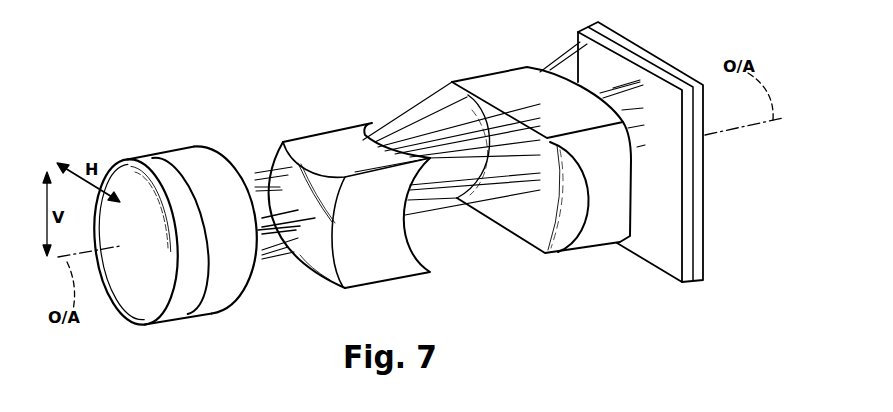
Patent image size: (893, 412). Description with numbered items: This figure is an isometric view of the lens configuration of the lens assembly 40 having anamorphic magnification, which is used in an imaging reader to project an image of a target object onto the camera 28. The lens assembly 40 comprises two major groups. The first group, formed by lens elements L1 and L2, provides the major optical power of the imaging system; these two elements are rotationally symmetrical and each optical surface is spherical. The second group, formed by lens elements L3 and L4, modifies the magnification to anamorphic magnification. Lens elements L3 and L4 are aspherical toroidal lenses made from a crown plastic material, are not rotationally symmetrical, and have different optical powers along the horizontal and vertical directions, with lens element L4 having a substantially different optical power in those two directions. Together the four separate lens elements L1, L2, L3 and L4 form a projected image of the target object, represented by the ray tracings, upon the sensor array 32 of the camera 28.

The lens assembly 40 is at (402, 78).
The sensor array 32 is at (597, 63).
The camera 28 is at (655, 63).
The lens element L1 is at (149, 249).
The lens element L2 is at (225, 245).
The lens element L3 is at (349, 220).
The lens element L4 is at (541, 177).